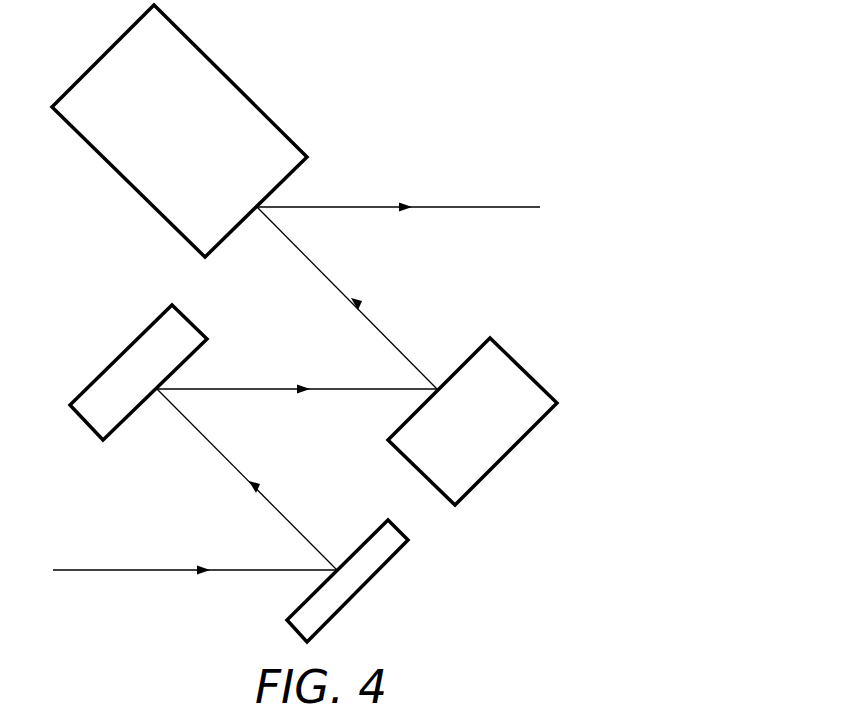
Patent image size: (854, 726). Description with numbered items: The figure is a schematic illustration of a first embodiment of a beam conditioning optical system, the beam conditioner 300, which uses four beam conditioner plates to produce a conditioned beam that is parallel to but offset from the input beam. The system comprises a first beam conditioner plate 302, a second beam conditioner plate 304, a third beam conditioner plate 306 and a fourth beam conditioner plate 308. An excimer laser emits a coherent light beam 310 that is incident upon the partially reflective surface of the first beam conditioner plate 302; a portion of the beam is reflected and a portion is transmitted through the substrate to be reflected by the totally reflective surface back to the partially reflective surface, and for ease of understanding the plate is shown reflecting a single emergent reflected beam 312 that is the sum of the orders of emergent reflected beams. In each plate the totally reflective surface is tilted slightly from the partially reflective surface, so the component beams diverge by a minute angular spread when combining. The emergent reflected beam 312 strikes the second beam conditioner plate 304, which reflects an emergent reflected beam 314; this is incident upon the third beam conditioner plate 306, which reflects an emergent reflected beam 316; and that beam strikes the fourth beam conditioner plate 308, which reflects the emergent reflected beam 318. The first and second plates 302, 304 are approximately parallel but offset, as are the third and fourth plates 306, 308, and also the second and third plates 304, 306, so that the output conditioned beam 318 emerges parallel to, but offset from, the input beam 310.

The beam conditioner 300 is at (470, 88).
The first beam conditioner plate 302 is at (378, 568).
The second beam conditioner plate 304 is at (120, 352).
The third beam conditioner plate 306 is at (525, 437).
The fourth beam conditioner plate 308 is at (98, 62).
The coherent light beam 310 is at (128, 568).
The emergent reflected beam 312 is at (288, 518).
The emergent reflected beam 314 is at (267, 388).
The emergent reflected beam 316 is at (390, 337).
The emergent reflected beam 318 is at (475, 207).